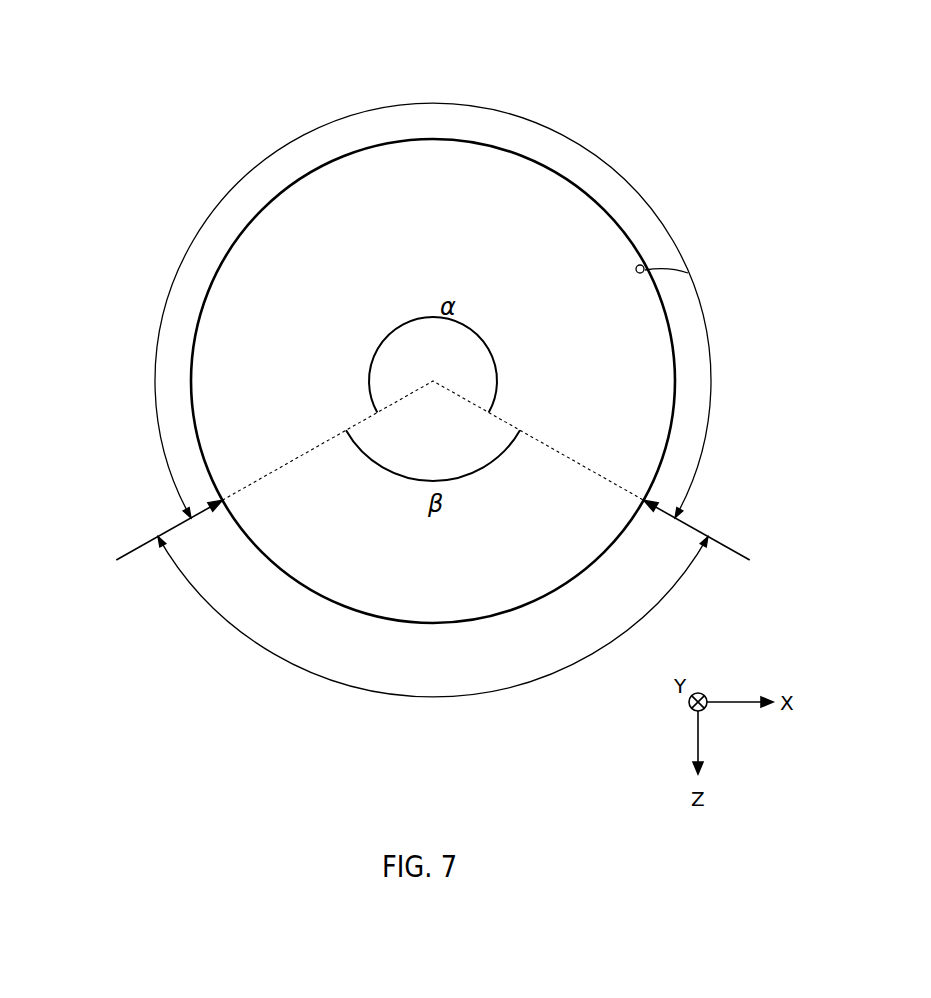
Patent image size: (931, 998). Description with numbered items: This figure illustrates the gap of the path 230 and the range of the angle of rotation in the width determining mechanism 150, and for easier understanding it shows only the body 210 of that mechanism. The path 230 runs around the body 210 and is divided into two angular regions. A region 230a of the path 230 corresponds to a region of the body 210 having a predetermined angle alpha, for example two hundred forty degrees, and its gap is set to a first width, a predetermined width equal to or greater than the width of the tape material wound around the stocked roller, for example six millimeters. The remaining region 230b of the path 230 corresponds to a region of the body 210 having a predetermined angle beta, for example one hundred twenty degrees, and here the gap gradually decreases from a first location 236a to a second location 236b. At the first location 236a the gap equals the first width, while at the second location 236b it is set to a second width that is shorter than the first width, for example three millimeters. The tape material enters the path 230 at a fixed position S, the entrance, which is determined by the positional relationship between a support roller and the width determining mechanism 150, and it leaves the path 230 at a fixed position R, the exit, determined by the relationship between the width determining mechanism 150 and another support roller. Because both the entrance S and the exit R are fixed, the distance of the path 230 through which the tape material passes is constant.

The width determining mechanism 150 is at (385, 381).
The body 210 is at (243, 232).
The path 230 is at (433, 411).
The region of the path 230a is at (342, 116).
The region of the path 230b is at (433, 697).
The first location 236a is at (727, 540).
The second location 236b is at (136, 541).
The fixed position R is at (233, 493).
The fixed position S is at (688, 273).